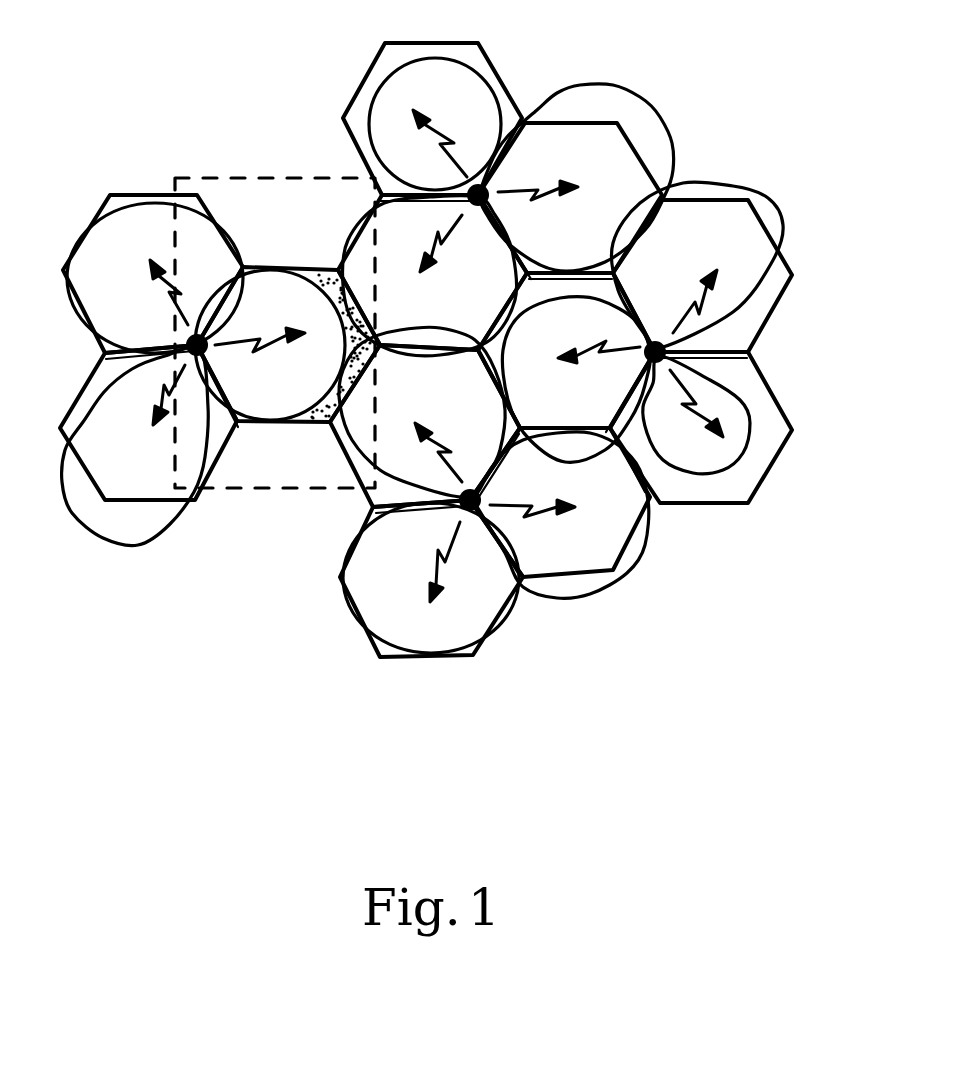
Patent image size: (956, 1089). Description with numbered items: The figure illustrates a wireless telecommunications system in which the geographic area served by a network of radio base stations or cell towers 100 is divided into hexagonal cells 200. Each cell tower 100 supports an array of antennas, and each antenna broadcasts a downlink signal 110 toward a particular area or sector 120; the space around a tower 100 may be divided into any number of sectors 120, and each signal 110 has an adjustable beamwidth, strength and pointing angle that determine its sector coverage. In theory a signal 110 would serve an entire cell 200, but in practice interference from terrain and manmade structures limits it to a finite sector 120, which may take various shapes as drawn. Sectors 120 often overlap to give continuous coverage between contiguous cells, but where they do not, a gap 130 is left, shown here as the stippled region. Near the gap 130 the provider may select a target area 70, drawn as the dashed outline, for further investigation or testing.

The target area 70 is at (217, 488).
The cell tower 100 is at (493, 205).
The downlink signal 110 is at (593, 342).
The sector 120 is at (706, 183).
The gap 130 is at (291, 434).
The hexagonal cell 200 is at (345, 122).